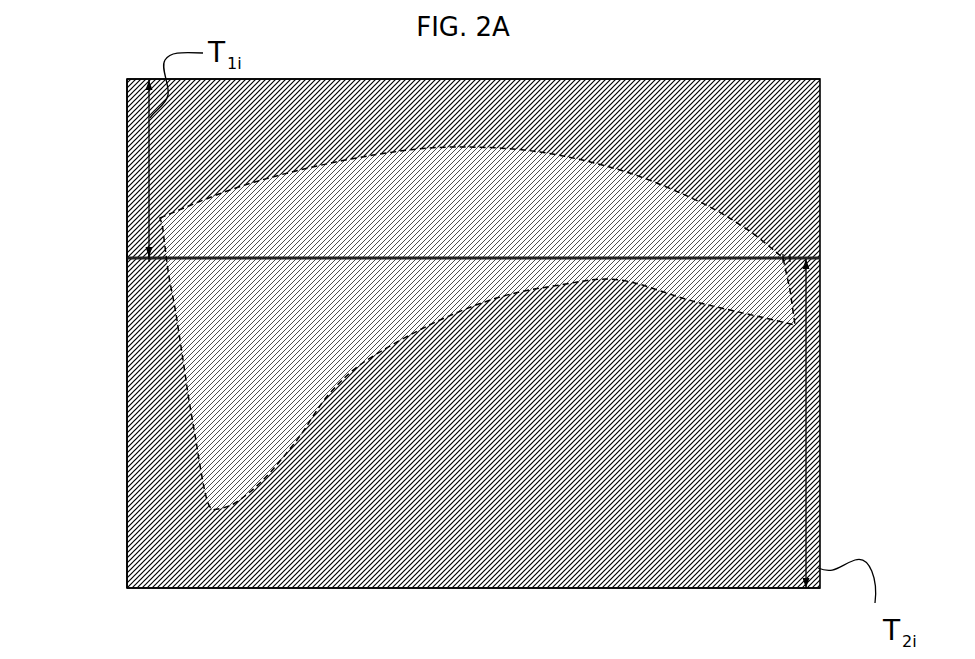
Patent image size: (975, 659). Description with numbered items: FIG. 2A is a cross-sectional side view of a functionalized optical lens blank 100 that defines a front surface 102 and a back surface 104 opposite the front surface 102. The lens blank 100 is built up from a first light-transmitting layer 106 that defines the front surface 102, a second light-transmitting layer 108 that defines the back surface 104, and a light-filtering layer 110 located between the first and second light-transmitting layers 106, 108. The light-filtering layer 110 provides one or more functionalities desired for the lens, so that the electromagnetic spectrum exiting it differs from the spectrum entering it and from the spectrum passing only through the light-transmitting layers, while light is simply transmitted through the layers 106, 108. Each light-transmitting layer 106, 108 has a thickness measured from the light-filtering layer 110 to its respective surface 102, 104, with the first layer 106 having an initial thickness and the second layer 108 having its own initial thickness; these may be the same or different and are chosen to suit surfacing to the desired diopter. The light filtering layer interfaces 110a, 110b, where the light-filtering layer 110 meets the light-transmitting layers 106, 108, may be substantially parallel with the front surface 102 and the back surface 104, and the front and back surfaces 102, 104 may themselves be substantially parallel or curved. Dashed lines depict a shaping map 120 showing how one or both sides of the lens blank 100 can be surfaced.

The functionalized optical lens blank 100 is at (822, 145).
The front surface 102 is at (627, 80).
The back surface 104 is at (197, 588).
The first light-transmitting layer 106 is at (127, 122).
The second light-transmitting layer 108 is at (127, 493).
The light-filtering layer 110 is at (127, 257).
The light filtering layer interface 110a is at (797, 252).
The light filtering layer interface 110b is at (147, 266).
The shaping map 120 is at (687, 202).